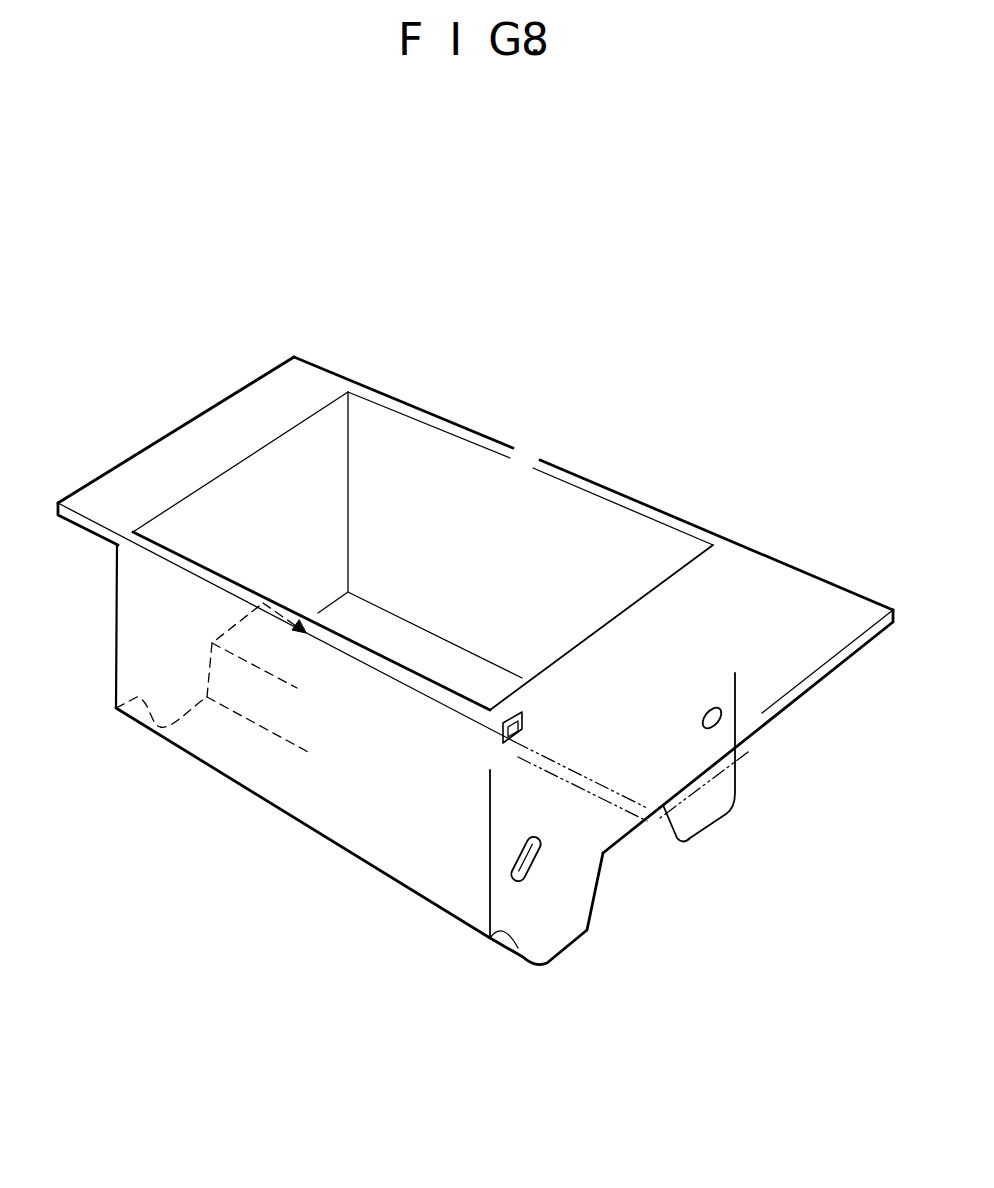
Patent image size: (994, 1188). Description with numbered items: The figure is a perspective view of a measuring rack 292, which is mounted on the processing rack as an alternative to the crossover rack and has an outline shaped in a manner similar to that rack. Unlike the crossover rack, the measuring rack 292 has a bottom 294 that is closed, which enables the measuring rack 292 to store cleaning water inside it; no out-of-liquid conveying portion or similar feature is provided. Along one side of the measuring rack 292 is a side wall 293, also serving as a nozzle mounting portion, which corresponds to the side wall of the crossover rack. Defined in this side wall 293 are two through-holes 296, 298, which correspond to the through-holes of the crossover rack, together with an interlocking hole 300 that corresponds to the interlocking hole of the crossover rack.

The measuring rack 292 is at (633, 491).
The side wall 293 is at (674, 571).
The bottom 294 is at (382, 632).
The through-hole 296 is at (530, 873).
The through-hole 298 is at (719, 722).
The interlocking hole 300 is at (508, 745).